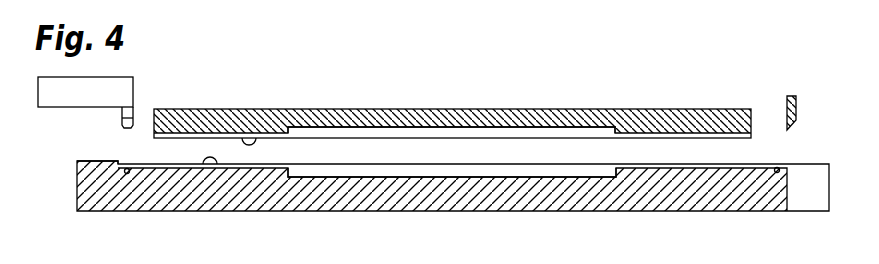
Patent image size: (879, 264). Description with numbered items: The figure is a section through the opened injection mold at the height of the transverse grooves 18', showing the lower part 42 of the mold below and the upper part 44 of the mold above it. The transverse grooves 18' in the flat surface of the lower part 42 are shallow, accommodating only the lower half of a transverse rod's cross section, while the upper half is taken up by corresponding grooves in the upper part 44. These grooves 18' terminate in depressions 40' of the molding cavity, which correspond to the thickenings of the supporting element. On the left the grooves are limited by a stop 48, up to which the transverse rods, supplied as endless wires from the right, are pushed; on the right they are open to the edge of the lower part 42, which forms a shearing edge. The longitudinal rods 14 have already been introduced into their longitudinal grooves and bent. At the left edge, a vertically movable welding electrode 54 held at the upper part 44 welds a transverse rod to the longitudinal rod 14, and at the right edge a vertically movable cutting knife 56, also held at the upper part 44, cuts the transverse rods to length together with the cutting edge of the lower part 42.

The welding electrode 54 is at (120, 88).
The transverse grooves 18' is at (240, 159).
The depressions 40' is at (452, 154).
The upper part of the mold 44 is at (660, 107).
The cutting knife 56 is at (795, 95).
The stop 48 is at (121, 160).
The longitudinal rods 14 is at (129, 173).
The lower part of the mold 42 is at (678, 211).